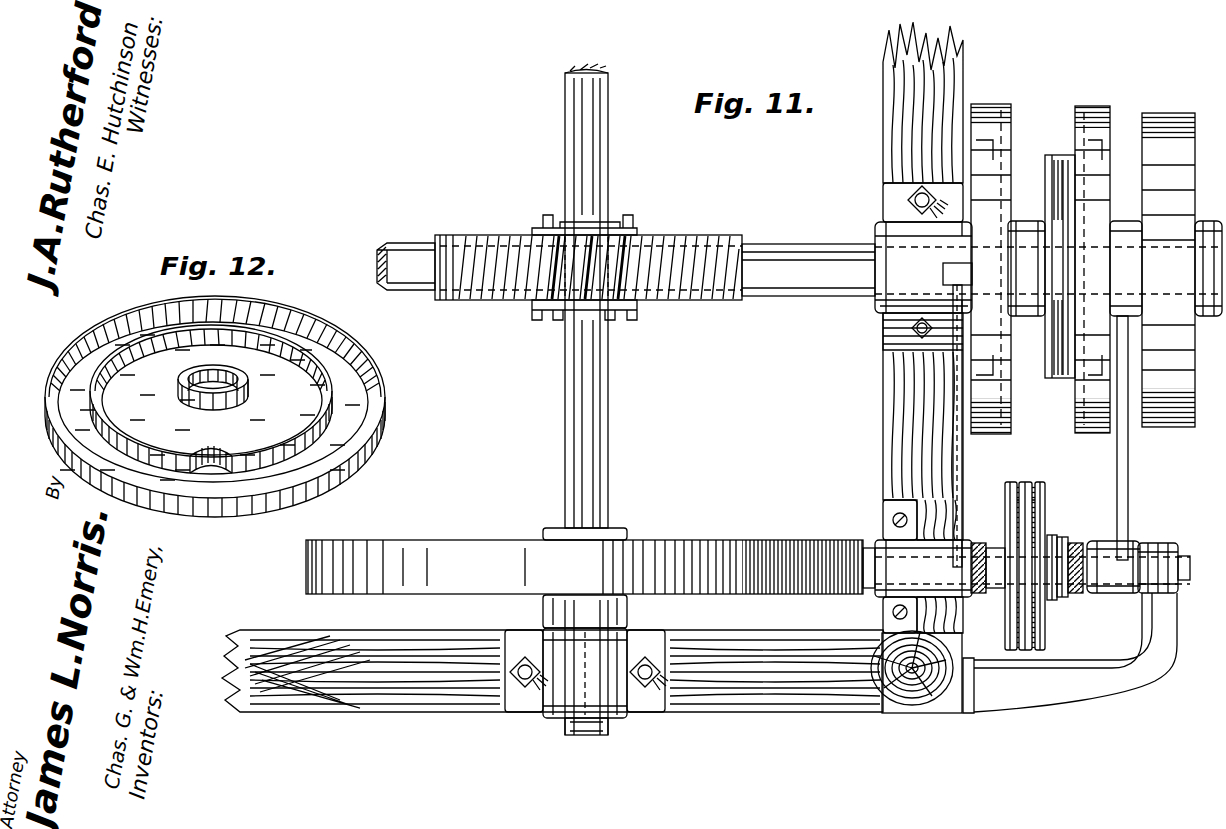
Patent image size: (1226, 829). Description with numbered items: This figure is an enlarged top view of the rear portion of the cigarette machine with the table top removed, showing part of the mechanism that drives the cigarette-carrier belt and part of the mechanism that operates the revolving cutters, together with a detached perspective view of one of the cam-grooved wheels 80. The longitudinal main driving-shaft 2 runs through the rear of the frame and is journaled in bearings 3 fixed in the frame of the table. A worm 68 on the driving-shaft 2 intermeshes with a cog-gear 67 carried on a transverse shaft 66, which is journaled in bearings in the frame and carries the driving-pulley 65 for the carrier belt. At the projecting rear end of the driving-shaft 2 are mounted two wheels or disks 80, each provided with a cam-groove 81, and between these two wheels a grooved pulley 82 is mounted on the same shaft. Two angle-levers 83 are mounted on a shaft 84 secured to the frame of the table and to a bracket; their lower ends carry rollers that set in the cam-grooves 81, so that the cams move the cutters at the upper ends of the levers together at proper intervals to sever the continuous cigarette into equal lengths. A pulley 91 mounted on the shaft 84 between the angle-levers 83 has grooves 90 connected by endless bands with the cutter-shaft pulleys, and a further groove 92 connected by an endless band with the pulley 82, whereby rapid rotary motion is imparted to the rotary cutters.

In FIG. 11, the longitudinal main driving-shaft 2 is at (802, 250).
In FIG. 11, the bearings 3 is at (917, 367).
In FIG. 11, the driving-pulley 65 is at (718, 541).
In FIG. 11, the transverse shaft 66 is at (606, 176).
In FIG. 11, the cog-gear 67 is at (706, 242).
In FIG. 11, the worm 68 is at (632, 226).
In FIG. 11, the cam-grooved wheels 80 is at (1010, 130).
In FIG. 12, the cam-grooved wheels 80 is at (215, 406).
In FIG. 12, the cam-grooves 81 is at (286, 399).
In FIG. 11, the grooved pulley 82 is at (1047, 166).
In FIG. 11, the angle-levers 83 is at (962, 460).
In FIG. 11, the shaft 84 is at (1189, 566).
In FIG. 11, the grooves 90 is at (1019, 486).
In FIG. 11, the pulley 91 is at (1047, 505).
In FIG. 11, the groove 92 is at (1062, 542).